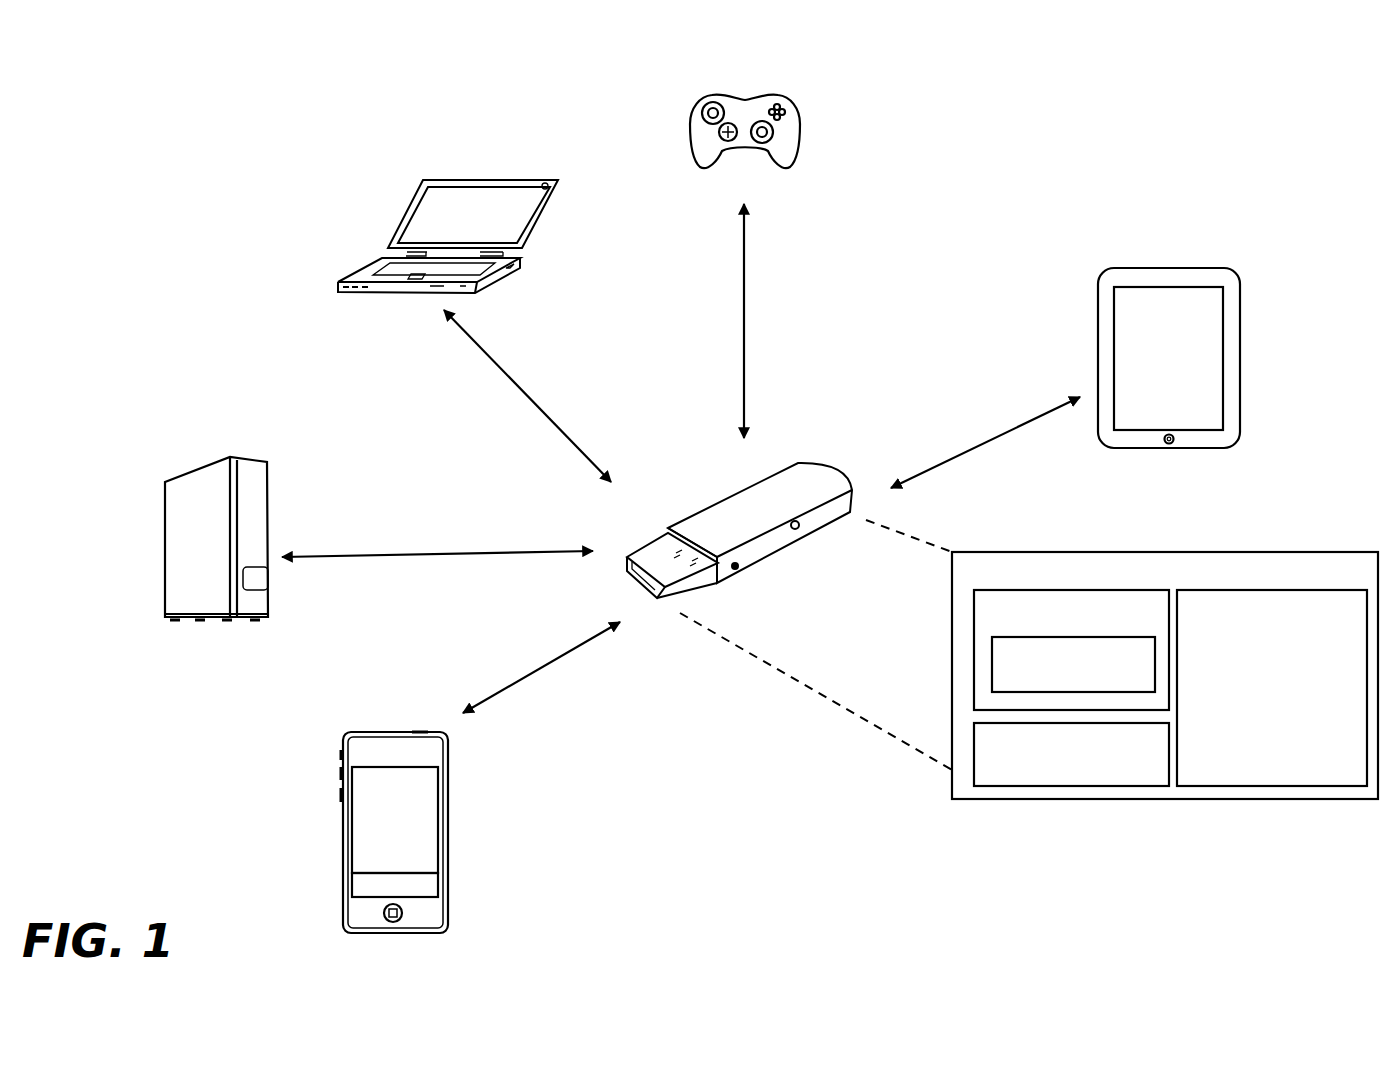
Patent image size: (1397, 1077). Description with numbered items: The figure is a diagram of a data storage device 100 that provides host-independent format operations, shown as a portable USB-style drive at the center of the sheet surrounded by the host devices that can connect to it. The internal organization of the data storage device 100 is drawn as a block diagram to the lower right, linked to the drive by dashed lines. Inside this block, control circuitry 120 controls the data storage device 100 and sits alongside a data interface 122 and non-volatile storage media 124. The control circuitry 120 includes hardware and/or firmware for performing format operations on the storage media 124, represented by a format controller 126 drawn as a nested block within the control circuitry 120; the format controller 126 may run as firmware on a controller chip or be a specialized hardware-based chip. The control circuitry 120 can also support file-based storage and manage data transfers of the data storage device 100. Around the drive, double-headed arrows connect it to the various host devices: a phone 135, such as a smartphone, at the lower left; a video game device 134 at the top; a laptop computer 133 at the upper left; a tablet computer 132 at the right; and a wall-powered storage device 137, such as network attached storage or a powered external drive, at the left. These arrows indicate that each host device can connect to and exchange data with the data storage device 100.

The data storage device 100 is at (1338, 552).
The control circuitry 120 is at (974, 653).
The data interface 122 is at (1071, 754).
The non-volatile storage media 124 is at (1272, 688).
The format controller 126 is at (1073, 664).
The tablet computer 132 is at (1169, 267).
The laptop computer 133 is at (492, 177).
The video game device 134 is at (742, 95).
The phone 135 is at (398, 732).
The wall-powered storage device 137 is at (220, 457).